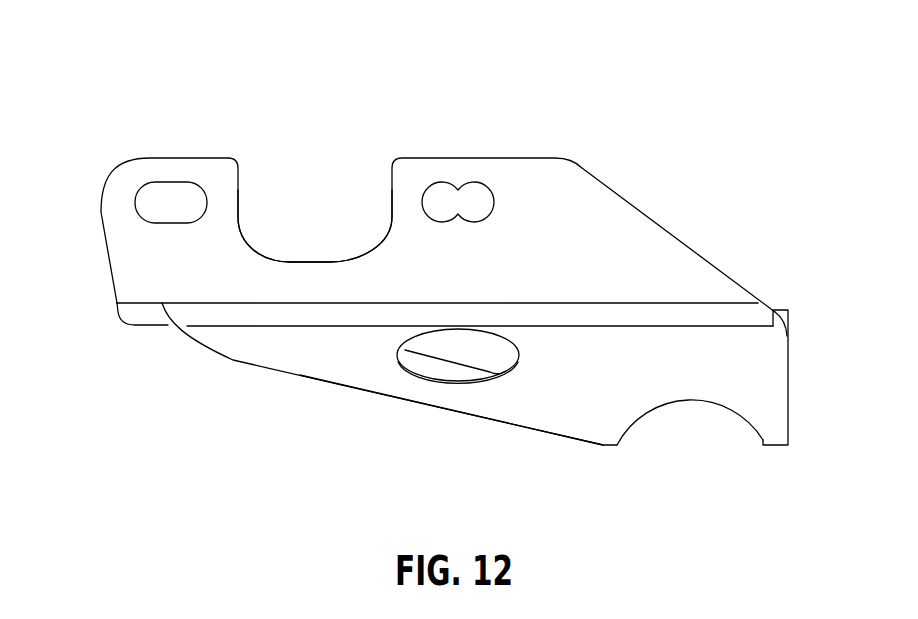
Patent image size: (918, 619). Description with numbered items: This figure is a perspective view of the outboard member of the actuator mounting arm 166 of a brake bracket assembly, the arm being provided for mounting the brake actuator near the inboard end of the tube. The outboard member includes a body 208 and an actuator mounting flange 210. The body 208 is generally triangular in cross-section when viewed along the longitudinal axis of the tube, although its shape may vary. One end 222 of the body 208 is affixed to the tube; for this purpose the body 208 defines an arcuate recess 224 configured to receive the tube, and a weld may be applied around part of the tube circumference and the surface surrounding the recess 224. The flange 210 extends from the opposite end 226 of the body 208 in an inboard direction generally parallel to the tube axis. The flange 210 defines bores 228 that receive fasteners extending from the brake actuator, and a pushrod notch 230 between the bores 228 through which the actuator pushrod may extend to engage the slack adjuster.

The actuator mounting arm 166 is at (114, 119).
The body 208 is at (327, 358).
The actuator mounting flange 210 is at (572, 240).
The end 222 is at (523, 427).
The arcuate recess 224 is at (692, 403).
The opposite end 226 is at (773, 307).
The bores 228 is at (170, 195).
The pushrod notch 230 is at (317, 195).